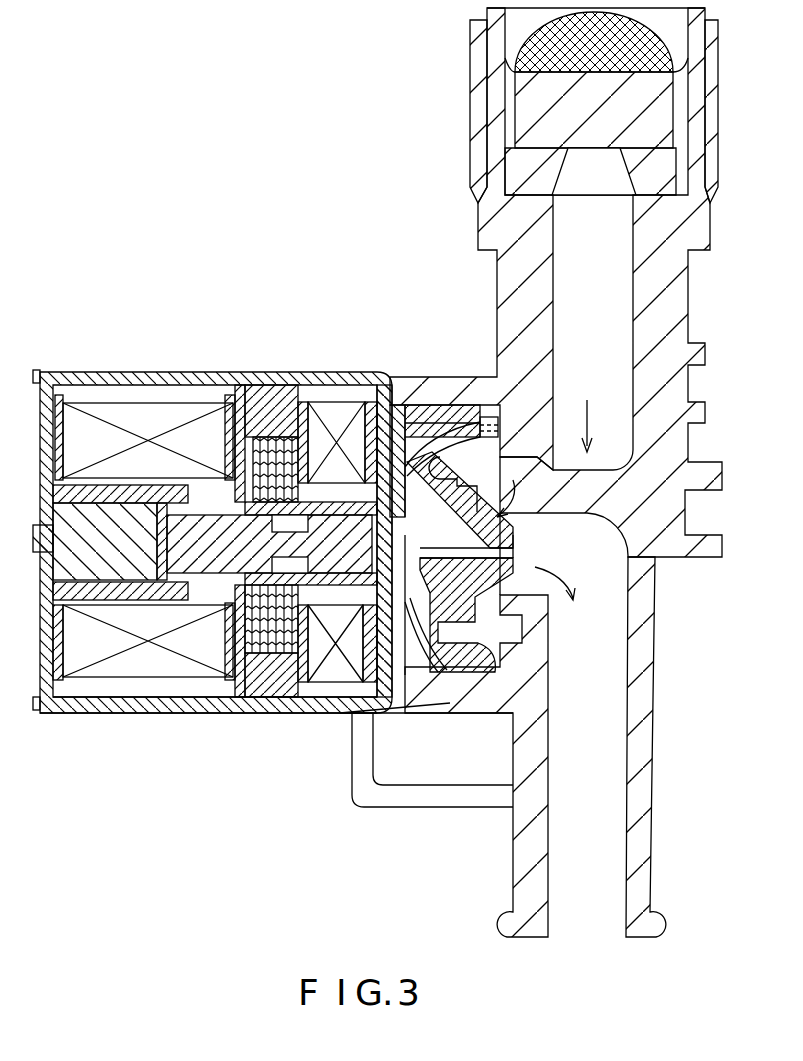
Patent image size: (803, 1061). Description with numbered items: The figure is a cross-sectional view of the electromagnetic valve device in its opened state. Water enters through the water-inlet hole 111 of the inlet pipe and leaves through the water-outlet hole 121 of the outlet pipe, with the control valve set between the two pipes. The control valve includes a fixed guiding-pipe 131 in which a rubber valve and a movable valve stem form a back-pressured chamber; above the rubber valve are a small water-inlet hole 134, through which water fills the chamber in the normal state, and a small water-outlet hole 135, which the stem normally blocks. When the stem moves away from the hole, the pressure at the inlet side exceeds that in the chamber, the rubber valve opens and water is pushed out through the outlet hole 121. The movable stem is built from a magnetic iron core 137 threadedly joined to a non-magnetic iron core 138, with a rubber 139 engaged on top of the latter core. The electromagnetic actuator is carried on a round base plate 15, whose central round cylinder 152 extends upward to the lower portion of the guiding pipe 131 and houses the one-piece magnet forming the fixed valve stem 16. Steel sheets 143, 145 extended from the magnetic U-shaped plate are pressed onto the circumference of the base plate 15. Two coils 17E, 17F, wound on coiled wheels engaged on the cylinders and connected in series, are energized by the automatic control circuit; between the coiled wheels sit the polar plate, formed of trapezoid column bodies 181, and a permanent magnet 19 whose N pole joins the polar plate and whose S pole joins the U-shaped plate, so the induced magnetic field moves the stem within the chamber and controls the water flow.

The base plate 15 is at (52, 385).
The fixed valve stem 16 is at (120, 520).
The round cylinder 152 is at (185, 530).
The steel sheet 143 is at (240, 450).
The magnetic iron core 137 is at (270, 415).
The trapezoid column body 181 is at (275, 470).
The non-magnetic iron core 138 is at (315, 530).
The rubber 139 is at (362, 525).
The small water-inlet hole 134 is at (486, 447).
The small water-outlet hole 135 is at (508, 553).
The water-inlet hole 111 is at (603, 353).
The water-outlet hole 121 is at (597, 710).
The coil 17E is at (145, 663).
The coil 17F is at (330, 672).
The steel sheet 145 is at (178, 708).
The permanent magnet 19 is at (258, 690).
The fixed guiding-pipe 131 is at (430, 665).